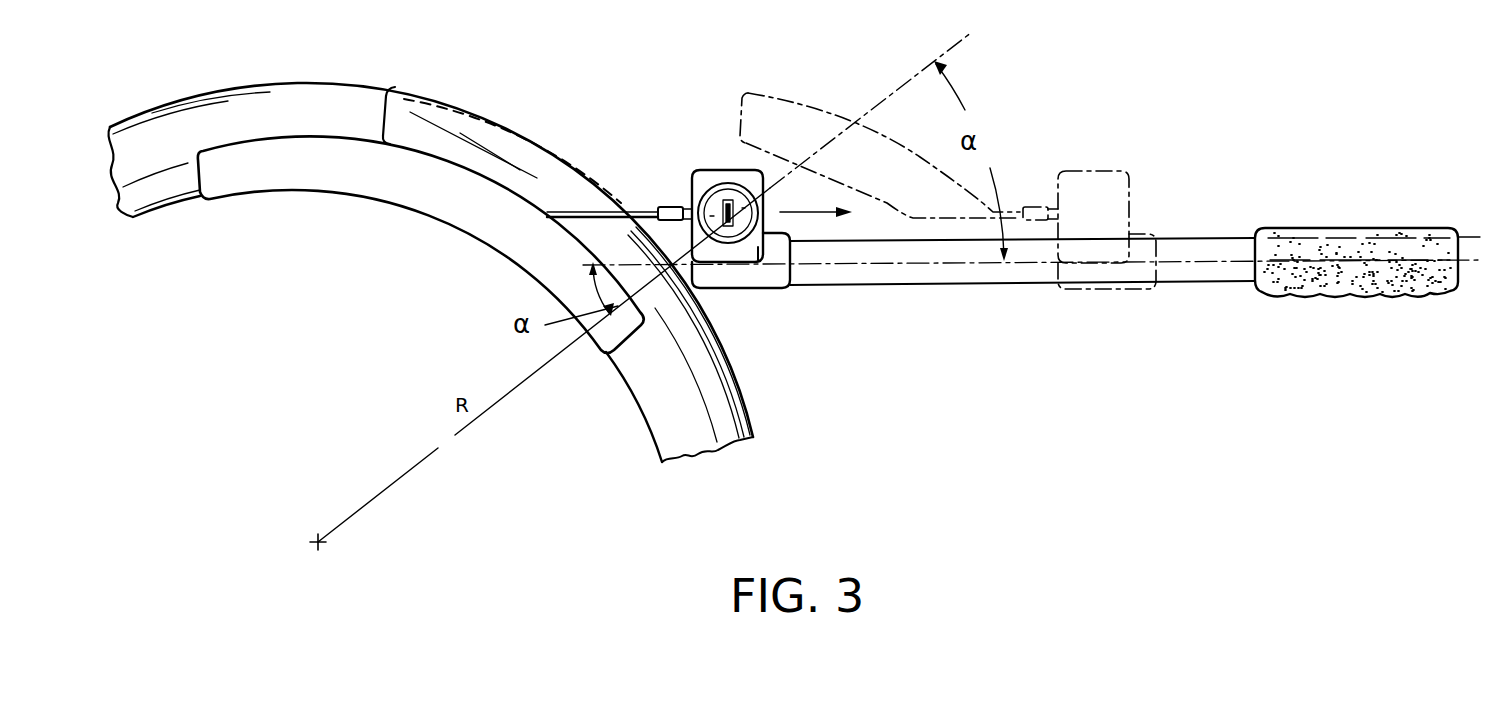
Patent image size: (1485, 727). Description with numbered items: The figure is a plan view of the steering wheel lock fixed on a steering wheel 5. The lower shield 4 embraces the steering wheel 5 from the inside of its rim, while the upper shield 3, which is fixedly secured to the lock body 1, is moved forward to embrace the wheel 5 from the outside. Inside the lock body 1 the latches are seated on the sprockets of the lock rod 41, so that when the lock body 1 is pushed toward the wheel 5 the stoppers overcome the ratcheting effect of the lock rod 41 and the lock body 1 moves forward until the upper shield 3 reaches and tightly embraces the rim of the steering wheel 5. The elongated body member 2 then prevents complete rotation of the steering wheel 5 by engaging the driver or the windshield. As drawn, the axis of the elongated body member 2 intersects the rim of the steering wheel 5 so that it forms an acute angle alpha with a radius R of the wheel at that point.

The lock body 1 is at (712, 178).
The elongated body member 2 is at (908, 279).
The upper shield 3 is at (482, 133).
The lower shield 4 is at (460, 203).
The steering wheel 5 is at (303, 101).
The lock rod 41 is at (677, 247).